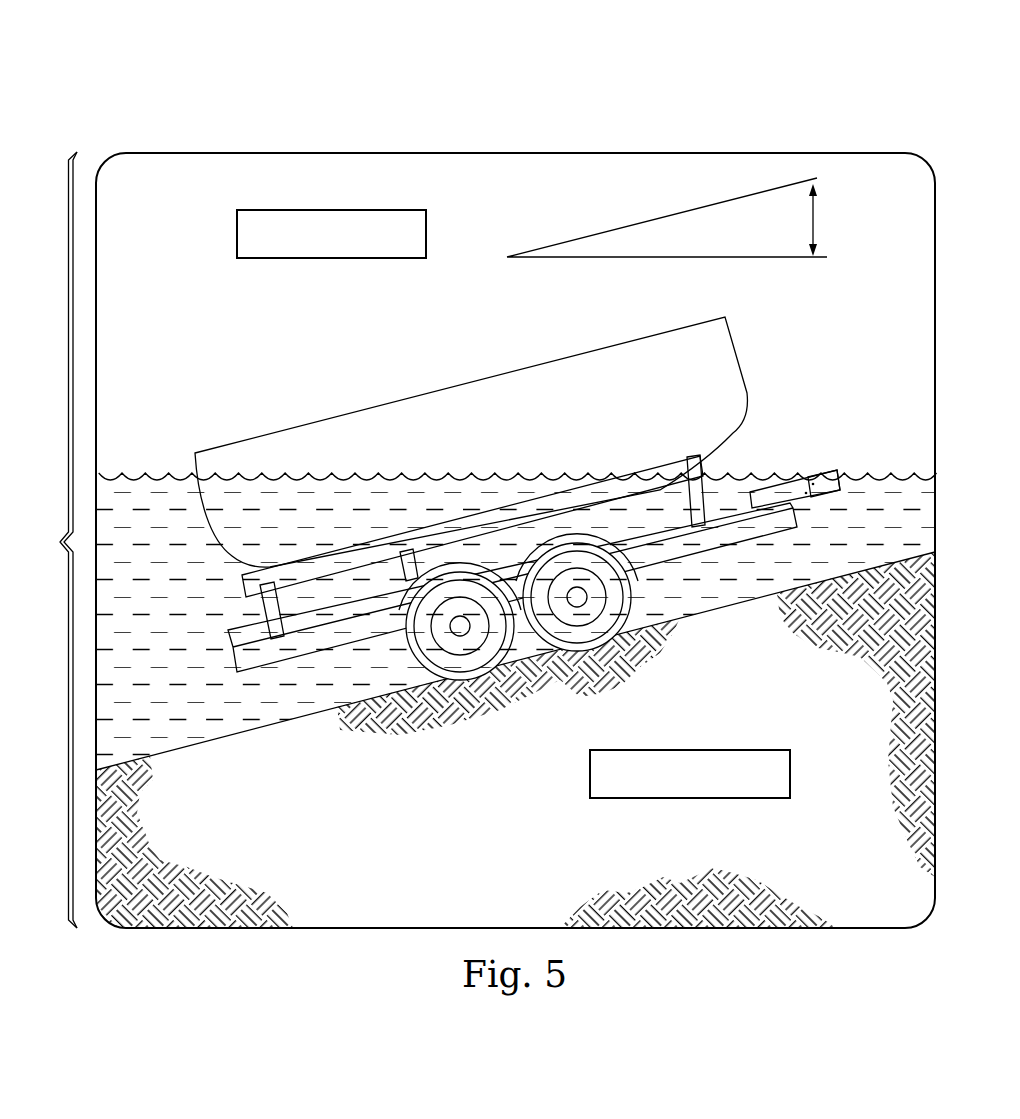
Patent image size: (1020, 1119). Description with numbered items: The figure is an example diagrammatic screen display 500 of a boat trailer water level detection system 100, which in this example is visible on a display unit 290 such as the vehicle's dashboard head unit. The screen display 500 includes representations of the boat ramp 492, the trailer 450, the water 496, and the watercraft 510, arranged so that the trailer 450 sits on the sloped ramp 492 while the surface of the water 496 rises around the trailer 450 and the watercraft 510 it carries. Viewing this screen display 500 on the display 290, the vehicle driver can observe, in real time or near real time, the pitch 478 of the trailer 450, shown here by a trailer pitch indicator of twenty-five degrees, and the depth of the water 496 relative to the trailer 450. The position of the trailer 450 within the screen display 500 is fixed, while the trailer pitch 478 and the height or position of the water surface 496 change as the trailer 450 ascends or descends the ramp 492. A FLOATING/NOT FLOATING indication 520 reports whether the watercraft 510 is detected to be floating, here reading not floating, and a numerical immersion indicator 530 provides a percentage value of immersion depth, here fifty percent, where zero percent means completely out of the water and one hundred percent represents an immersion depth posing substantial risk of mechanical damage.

The boat trailer water level detection system 100 is at (331, 62).
The display unit 290 is at (677, 160).
The trailer 450 is at (797, 517).
The pitch 478 is at (816, 230).
The boat ramp 492 is at (208, 742).
The water 496 is at (156, 478).
The screen display 500 is at (474, 511).
The watercraft 510 is at (740, 355).
The FLOATING/NOT FLOATING indication 520 is at (237, 232).
The numerical immersion indicator 530 is at (790, 773).